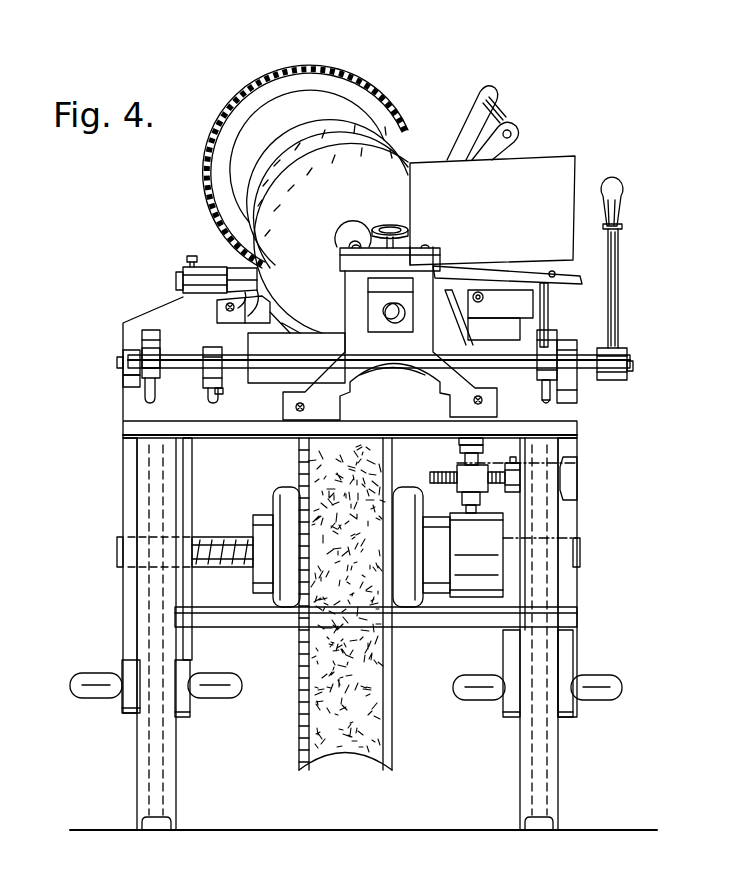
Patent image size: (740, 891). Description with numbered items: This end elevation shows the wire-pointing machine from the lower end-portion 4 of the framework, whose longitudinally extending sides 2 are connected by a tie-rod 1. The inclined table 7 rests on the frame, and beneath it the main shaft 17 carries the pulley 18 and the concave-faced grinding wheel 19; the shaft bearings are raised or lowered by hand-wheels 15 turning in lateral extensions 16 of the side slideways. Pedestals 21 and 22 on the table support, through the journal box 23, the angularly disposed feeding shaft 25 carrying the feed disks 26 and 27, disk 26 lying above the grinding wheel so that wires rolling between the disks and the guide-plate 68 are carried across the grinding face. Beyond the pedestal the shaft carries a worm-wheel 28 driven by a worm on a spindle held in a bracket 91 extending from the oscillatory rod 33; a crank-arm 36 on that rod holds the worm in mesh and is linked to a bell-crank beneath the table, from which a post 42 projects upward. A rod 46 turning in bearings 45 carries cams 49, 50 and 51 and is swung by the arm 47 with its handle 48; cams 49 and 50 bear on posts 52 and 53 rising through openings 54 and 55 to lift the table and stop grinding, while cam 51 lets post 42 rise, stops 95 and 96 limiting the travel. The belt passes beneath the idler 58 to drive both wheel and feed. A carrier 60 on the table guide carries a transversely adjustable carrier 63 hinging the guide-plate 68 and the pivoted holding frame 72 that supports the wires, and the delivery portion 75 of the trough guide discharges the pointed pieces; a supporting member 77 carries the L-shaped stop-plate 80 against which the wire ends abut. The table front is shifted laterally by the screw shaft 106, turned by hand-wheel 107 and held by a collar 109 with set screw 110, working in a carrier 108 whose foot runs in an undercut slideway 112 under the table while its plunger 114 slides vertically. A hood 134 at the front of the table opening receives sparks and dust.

The frame 1 is at (435, 630).
The side 2 is at (143, 788).
The end-portion 4 is at (442, 812).
The table 7 is at (133, 428).
The hand-wheel 15 is at (83, 673).
The lateral extension 16 is at (123, 715).
The main shaft 17 is at (217, 555).
The pulley 18 is at (378, 547).
The grinding wheel 19 is at (299, 727).
The pedestal 21 is at (348, 376).
The pedestal 22 is at (217, 312).
The journal box 23 is at (390, 304).
The shaft 25 is at (396, 318).
The feed disk 26 is at (331, 238).
The feed disk 27 is at (287, 148).
The worm-wheel 28 is at (300, 82).
The rod 33 is at (180, 277).
The crank-arm 36 is at (188, 268).
The post 42 is at (213, 403).
The bearing 45 is at (132, 380).
The rod 46 is at (123, 362).
The lever 47 is at (620, 262).
The handle-member 48 is at (620, 197).
The cam 49 is at (550, 348).
The cam 50 is at (140, 338).
The cam 51 is at (203, 380).
The post 52 is at (540, 389).
The post 53 is at (156, 392).
The opening 54 is at (545, 403).
The opening 55 is at (148, 402).
The idler 58 is at (460, 498).
The carrier 60 is at (494, 329).
The carrier 63 is at (500, 306).
The guide-plate 68 is at (448, 332).
The holding frame 72 is at (517, 124).
The delivery portion 75 is at (268, 327).
The supporting member 77 is at (548, 297).
The guide-plate 80 is at (496, 220).
The bracket 91 is at (233, 265).
The stop 95 is at (150, 330).
The stop 96 is at (221, 397).
The screw shaft 106 is at (432, 473).
The hand-wheel 107 is at (571, 482).
The carrier 108 is at (458, 460).
The collar 109 is at (517, 492).
The set screw 110 is at (520, 460).
The slideway 112 is at (462, 447).
The plunger 114 is at (474, 516).
The hood 134 is at (379, 358).